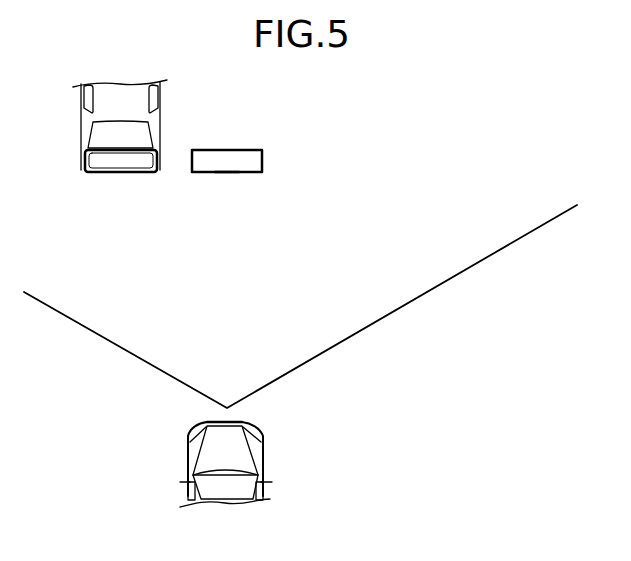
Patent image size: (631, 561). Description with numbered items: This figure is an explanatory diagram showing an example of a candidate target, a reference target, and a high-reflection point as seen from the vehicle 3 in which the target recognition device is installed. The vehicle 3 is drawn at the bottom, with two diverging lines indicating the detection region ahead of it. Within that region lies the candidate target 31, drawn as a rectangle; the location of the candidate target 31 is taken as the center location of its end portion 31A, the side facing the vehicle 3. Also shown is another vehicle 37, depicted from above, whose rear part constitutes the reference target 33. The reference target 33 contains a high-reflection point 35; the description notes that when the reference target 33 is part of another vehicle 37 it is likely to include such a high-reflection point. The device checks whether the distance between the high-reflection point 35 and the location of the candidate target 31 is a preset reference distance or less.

The vehicle 3 is at (263, 472).
The candidate target 31 is at (228, 150).
The end portion 31A is at (228, 173).
The reference target 33 is at (84, 154).
The high-reflection point 35 is at (120, 158).
The another vehicle 37 is at (81, 112).